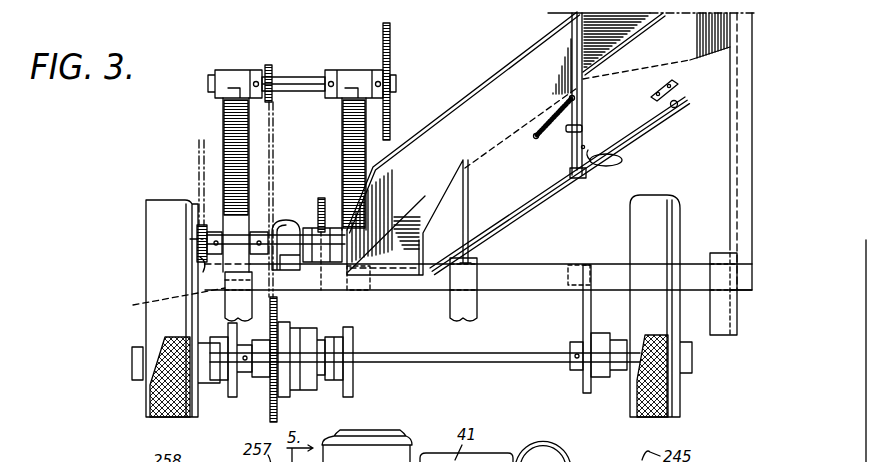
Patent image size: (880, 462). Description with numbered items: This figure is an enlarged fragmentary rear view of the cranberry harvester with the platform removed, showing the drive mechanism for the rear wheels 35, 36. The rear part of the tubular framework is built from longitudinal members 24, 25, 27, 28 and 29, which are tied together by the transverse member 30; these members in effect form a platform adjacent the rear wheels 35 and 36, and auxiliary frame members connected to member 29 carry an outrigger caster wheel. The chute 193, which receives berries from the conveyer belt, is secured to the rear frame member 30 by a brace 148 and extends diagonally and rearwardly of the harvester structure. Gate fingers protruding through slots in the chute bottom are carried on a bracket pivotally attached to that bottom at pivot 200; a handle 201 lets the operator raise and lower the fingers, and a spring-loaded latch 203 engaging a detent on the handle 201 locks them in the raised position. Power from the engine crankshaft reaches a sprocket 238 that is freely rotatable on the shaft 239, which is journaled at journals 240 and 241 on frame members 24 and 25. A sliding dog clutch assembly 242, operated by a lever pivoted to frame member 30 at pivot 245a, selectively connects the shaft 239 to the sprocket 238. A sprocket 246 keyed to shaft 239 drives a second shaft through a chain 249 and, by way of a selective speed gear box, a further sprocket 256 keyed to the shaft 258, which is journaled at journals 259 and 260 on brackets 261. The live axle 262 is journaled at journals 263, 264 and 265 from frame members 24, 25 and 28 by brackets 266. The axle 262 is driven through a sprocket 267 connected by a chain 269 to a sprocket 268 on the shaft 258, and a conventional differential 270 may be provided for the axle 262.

The longitudinal member 24 is at (167, 302).
The longitudinal member 25 is at (353, 283).
The longitudinal member 27 is at (478, 272).
The longitudinal member 28 is at (600, 266).
The longitudinal member 29 is at (718, 262).
The transverse member 30 is at (503, 286).
The rear wheel 35 is at (152, 198).
The rear wheel 36 is at (670, 400).
The brace 148 is at (735, 180).
The chute 193 is at (498, 70).
The pivot 200 is at (677, 106).
The handle 201 is at (633, 137).
The spring-loaded latch 203 is at (571, 70).
The sprocket 238 is at (321, 198).
The shaft 239 is at (207, 244).
The journal 240 is at (200, 268).
The journal 241 is at (371, 230).
The sliding dog clutch assembly 242 is at (277, 222).
The pivot 245a is at (316, 246).
The sprocket 246 is at (200, 222).
The chain 249 is at (198, 143).
The sprocket 256 is at (392, 35).
The shaft 258 is at (300, 77).
The journal 259 is at (350, 70).
The journal 260 is at (226, 70).
The bracket 261 is at (222, 108).
The live axle 262 is at (495, 355).
The journal 263 is at (220, 382).
The journal 264 is at (338, 347).
The journal 265 is at (602, 380).
The bracket 266 is at (262, 414).
The sprocket 267 is at (278, 410).
The sprocket 268 is at (269, 65).
The chain 269 is at (274, 143).
The differential 270 is at (318, 313).